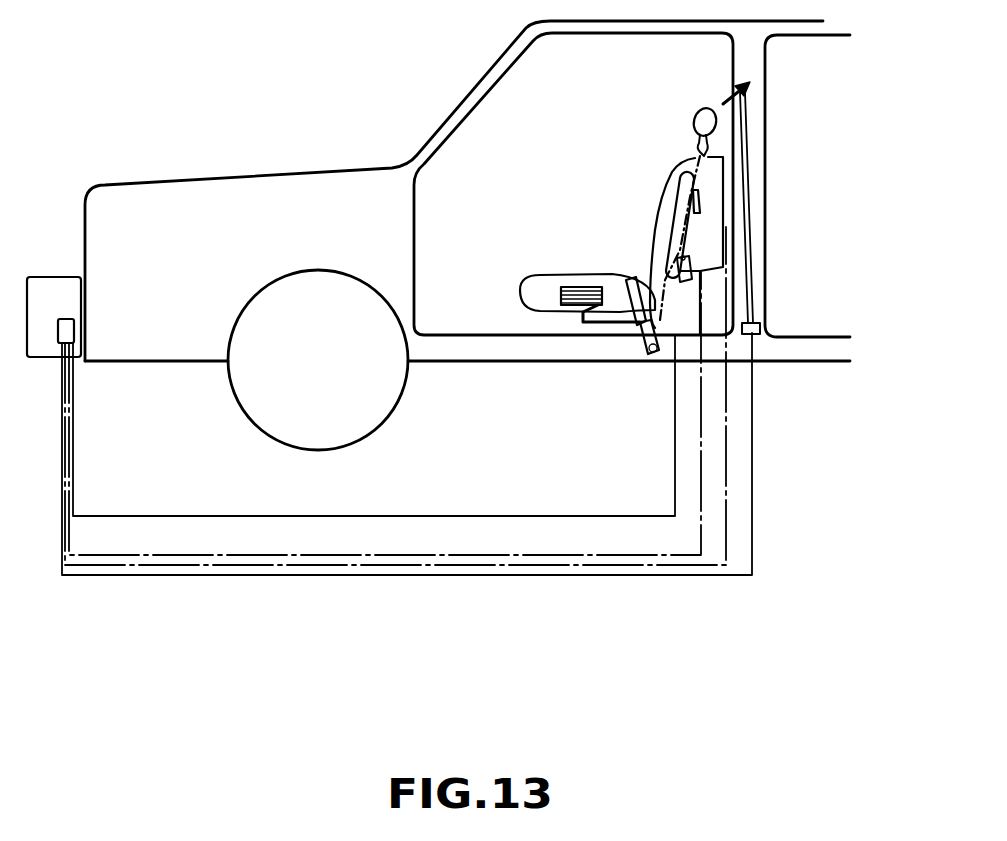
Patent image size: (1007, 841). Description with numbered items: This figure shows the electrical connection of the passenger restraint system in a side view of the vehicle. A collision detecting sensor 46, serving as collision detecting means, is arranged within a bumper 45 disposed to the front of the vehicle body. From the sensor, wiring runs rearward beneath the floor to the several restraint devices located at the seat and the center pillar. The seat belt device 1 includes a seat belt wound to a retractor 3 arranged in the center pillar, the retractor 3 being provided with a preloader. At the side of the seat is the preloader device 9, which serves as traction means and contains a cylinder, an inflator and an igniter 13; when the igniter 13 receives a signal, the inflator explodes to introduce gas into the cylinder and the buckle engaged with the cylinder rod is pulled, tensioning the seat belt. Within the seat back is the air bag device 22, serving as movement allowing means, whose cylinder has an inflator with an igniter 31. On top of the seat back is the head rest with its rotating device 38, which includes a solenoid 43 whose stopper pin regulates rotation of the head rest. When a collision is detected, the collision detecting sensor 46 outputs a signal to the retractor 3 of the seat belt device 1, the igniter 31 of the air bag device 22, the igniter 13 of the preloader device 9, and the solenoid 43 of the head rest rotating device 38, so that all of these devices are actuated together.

The seat belt device 1 is at (750, 107).
The retractor 3 is at (757, 335).
The preloader device 9 is at (657, 322).
The igniter 13 is at (661, 360).
The air bag device 22 is at (660, 220).
The igniter 31 is at (690, 264).
The rotating device 38 is at (691, 120).
The solenoid 43 is at (710, 150).
The bumper 45 is at (48, 285).
The collision detecting sensor 46 is at (58, 331).